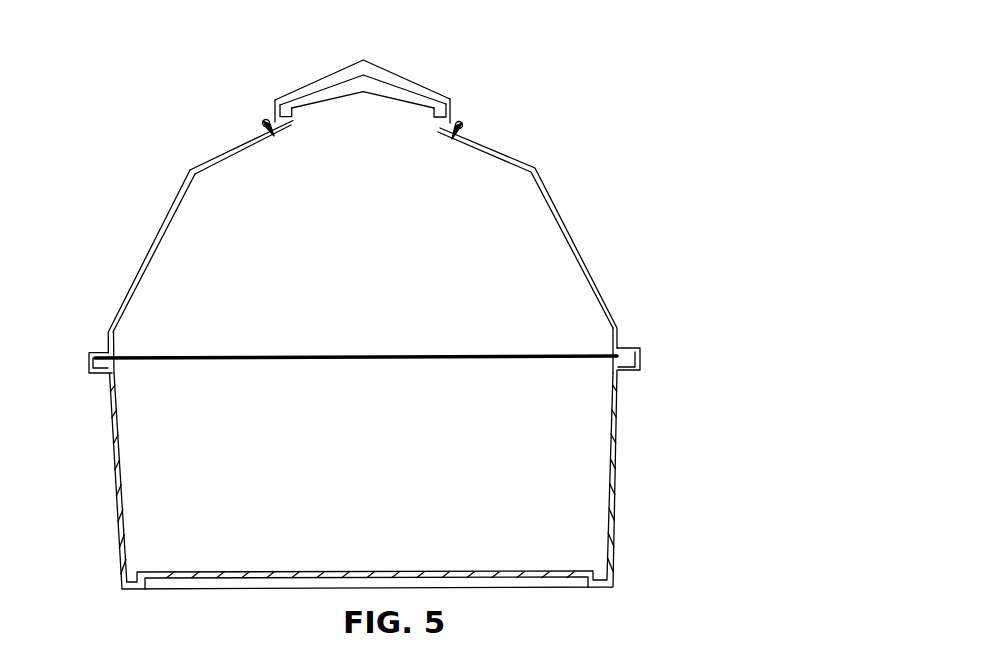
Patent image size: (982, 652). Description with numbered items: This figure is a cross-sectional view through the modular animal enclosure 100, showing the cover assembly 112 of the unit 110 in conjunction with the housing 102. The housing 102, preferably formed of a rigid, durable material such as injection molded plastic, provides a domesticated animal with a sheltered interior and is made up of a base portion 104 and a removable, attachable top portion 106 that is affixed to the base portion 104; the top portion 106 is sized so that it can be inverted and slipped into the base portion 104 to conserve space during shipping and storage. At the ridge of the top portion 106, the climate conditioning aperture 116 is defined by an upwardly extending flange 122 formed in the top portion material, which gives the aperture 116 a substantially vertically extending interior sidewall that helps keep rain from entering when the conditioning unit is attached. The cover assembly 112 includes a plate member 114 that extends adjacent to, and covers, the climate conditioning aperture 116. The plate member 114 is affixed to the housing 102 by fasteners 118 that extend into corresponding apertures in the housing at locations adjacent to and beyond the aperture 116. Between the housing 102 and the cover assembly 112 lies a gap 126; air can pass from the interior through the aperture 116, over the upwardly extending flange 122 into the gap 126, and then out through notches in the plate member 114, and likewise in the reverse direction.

The modular animal enclosure 100 is at (126, 162).
The housing 102 is at (128, 283).
The base portion 104 is at (618, 450).
The top portion 106 is at (586, 250).
The unit 110 is at (281, 84).
The cover assembly 112 is at (403, 65).
The plate member 114 is at (303, 95).
The climate conditioning aperture 116 is at (316, 131).
The fasteners 118 is at (262, 124).
The upwardly extending flange 122 is at (448, 103).
The gap 126 is at (332, 88).